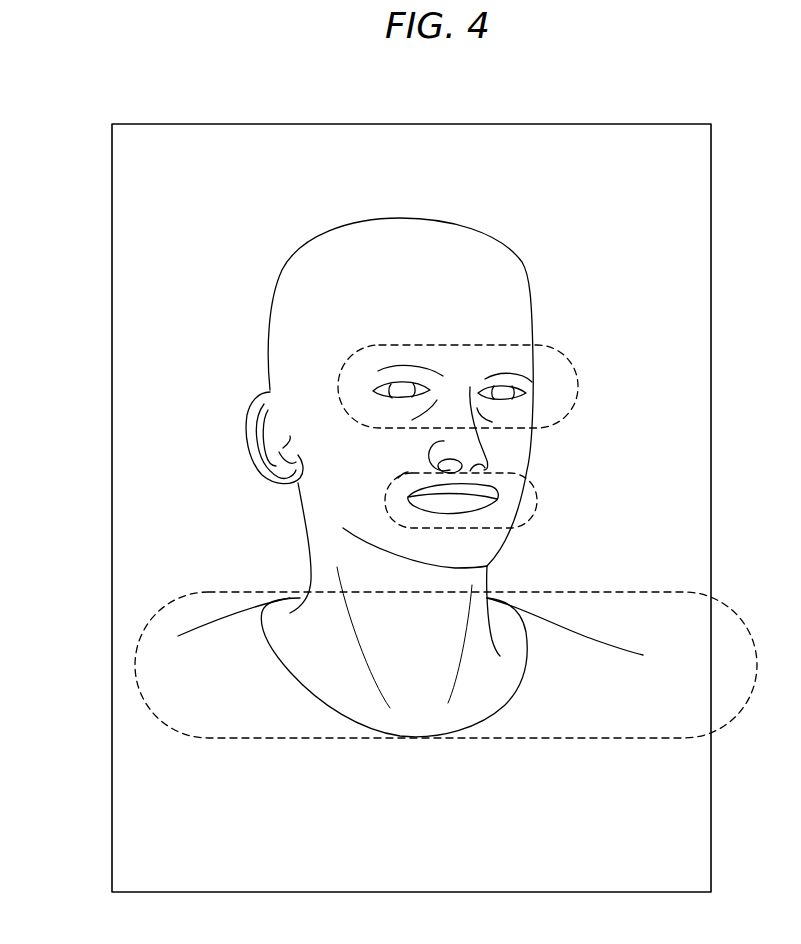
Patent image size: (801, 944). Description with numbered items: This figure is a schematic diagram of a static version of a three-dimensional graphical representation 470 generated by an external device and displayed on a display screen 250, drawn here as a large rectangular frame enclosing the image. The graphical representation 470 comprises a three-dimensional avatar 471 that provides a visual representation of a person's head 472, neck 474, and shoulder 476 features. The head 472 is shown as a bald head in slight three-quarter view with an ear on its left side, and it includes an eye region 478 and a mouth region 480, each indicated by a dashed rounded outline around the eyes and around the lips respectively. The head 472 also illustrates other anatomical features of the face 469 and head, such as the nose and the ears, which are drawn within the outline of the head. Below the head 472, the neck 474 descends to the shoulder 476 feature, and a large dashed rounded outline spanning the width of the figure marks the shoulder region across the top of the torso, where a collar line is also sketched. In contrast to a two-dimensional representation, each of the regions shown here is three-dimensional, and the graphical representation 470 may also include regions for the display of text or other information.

The display screen 250 is at (118, 124).
The graphical representation 470 is at (442, 464).
The three-dimensional avatar 471 is at (320, 250).
The head feature 472 is at (446, 464).
The face 469 is at (527, 292).
The eye region 478 is at (578, 386).
The mouth region 480 is at (496, 477).
The neck feature 474 is at (494, 575).
The shoulder feature 476 is at (661, 592).